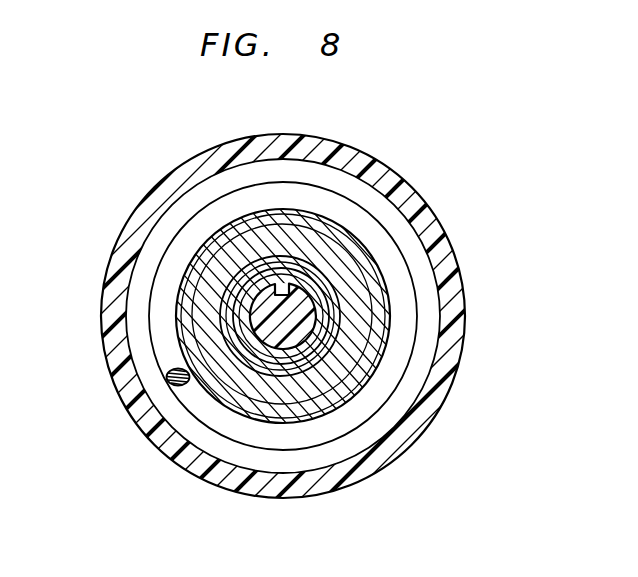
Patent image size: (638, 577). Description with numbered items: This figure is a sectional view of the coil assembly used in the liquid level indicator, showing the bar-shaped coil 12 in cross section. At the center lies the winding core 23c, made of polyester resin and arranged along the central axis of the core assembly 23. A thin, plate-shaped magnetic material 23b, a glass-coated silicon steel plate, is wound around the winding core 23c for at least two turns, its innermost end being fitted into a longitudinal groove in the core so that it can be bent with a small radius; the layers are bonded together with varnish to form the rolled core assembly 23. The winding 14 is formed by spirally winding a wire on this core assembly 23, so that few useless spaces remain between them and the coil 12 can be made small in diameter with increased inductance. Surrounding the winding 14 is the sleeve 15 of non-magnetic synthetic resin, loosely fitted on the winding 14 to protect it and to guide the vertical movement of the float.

The coil 12 is at (318, 128).
The winding 14 is at (158, 343).
The sleeve 15 is at (143, 203).
The core assembly 23 is at (383, 260).
The magnetic material 23b is at (383, 313).
The winding core 23c is at (310, 325).